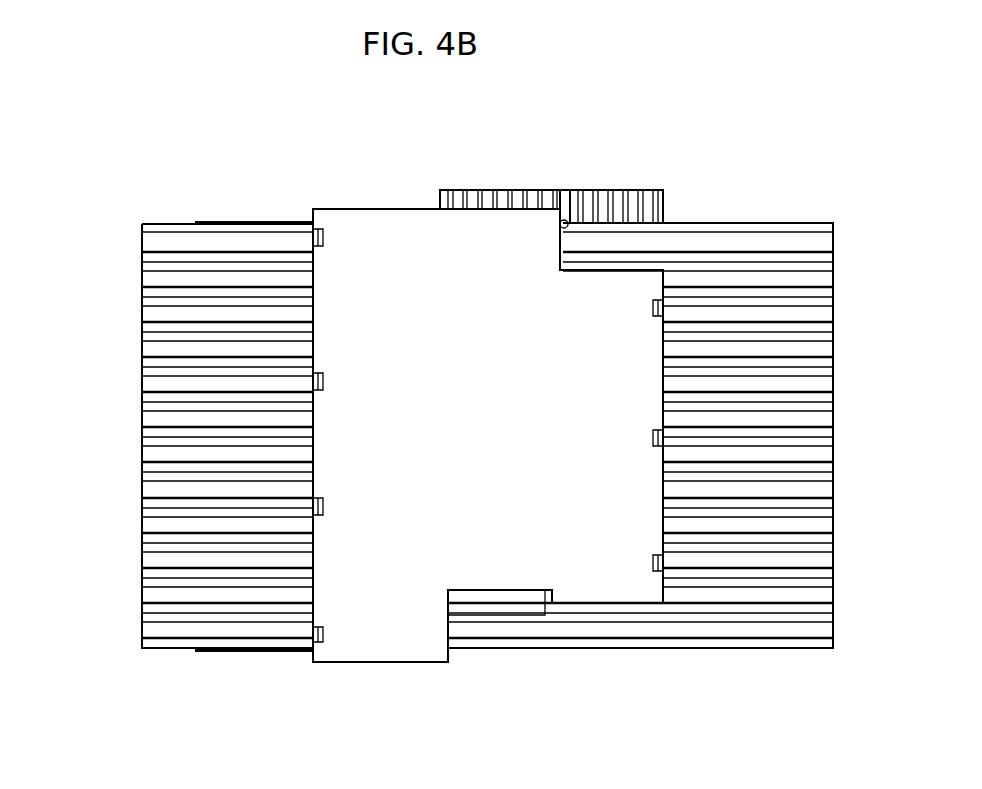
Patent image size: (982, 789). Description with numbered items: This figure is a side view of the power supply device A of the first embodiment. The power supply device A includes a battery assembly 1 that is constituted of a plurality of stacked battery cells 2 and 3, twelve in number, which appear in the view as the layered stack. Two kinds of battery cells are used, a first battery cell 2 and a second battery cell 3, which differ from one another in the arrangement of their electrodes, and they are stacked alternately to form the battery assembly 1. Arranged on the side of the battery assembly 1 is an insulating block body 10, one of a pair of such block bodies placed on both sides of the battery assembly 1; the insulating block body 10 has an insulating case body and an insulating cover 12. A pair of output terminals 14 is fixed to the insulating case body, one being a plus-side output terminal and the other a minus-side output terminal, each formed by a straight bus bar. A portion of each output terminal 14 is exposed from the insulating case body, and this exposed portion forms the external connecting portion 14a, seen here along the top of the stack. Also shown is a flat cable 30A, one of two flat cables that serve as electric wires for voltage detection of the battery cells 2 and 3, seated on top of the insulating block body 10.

The power supply device A is at (131, 213).
The battery assembly 1 is at (170, 222).
The first battery cell 2 is at (148, 239).
The second battery cell 3 is at (148, 274).
The insulating block body 10 is at (395, 208).
The insulating cover 12 is at (384, 627).
The output terminal 14 is at (271, 222).
The external connecting portion 14a is at (200, 221).
The flat cable 30A is at (487, 199).